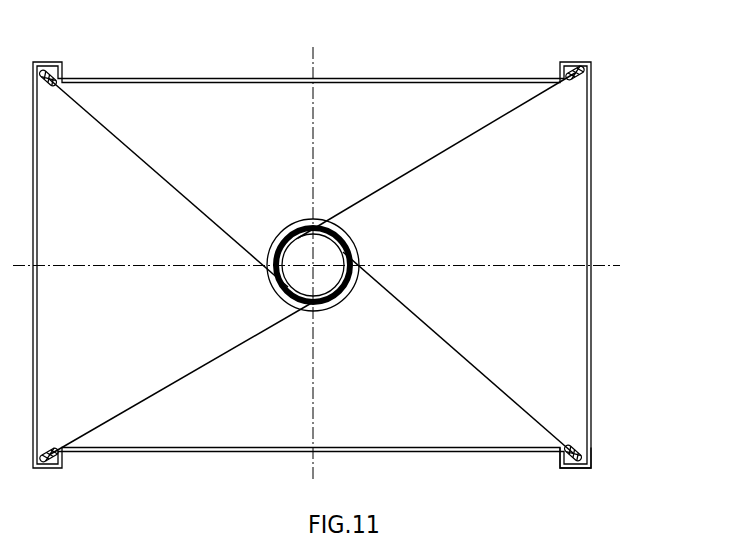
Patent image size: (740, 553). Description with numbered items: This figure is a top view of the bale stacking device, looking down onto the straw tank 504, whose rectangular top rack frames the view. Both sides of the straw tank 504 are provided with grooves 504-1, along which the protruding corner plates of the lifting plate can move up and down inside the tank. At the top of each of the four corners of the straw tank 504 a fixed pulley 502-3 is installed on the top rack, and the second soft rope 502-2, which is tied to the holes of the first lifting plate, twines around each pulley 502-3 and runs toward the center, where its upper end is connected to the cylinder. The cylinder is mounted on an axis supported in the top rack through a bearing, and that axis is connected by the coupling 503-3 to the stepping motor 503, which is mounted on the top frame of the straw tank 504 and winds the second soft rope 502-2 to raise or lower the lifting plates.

The fixed pulley 502-3 is at (482, 141).
The second soft rope 502-2 is at (505, 357).
The stepping motor 503 is at (467, 265).
The coupling 503-3 is at (472, 225).
The straw tank 504 is at (350, 265).
The groove 504-1 is at (613, 446).